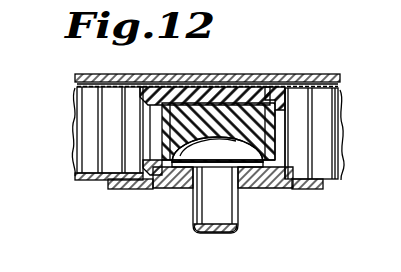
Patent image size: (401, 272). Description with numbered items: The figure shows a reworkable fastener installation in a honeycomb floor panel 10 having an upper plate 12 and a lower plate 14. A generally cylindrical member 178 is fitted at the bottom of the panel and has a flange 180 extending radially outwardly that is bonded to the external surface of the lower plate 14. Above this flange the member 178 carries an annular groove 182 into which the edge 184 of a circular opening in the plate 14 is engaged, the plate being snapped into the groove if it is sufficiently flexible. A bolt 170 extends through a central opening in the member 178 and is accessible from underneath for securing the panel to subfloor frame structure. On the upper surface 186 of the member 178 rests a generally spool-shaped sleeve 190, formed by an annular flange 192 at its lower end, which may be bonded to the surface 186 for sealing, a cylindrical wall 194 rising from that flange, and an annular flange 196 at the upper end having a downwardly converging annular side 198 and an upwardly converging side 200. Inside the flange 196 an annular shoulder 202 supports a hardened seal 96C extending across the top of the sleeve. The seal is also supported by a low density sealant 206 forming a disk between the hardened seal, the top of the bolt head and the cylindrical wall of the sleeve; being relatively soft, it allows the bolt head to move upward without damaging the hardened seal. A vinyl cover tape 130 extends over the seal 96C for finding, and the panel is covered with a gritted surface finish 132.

The honeycomb floor panel 10 is at (69, 157).
The upper plate 12 is at (108, 73).
The lower plate 14 is at (82, 181).
The hardened seal 96C is at (222, 74).
The vinyl cover tape 130 is at (247, 76).
The gritted plastic surface finish 132 is at (316, 75).
The bolt 170 is at (217, 221).
The cylindrical member 178 is at (275, 189).
The flange 180 is at (122, 187).
The annular groove 182 is at (301, 190).
The edge 184 is at (157, 190).
The upper surface 186 is at (148, 145).
The spool-shaped sleeve 190 is at (278, 147).
The annular flange 192 is at (330, 170).
The cylindrical wall 194 is at (290, 128).
The annular flange 196 is at (289, 80).
The downwardly converging annular side 198 is at (296, 104).
The upwardly converging side 200 is at (160, 75).
The annular shoulder 202 is at (179, 76).
The low density sealant 206 is at (240, 125).